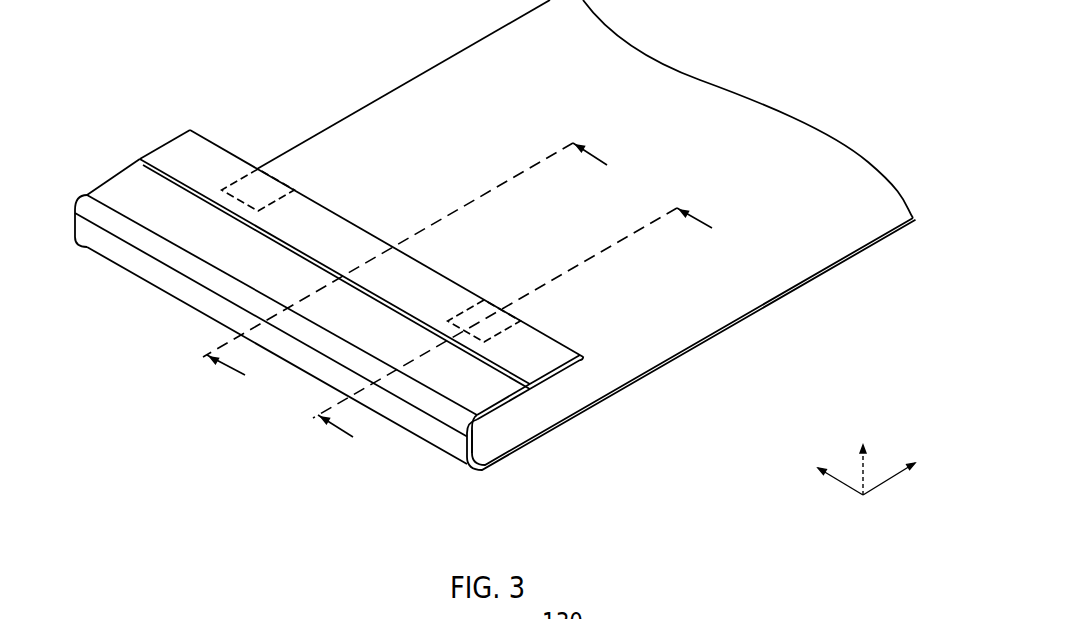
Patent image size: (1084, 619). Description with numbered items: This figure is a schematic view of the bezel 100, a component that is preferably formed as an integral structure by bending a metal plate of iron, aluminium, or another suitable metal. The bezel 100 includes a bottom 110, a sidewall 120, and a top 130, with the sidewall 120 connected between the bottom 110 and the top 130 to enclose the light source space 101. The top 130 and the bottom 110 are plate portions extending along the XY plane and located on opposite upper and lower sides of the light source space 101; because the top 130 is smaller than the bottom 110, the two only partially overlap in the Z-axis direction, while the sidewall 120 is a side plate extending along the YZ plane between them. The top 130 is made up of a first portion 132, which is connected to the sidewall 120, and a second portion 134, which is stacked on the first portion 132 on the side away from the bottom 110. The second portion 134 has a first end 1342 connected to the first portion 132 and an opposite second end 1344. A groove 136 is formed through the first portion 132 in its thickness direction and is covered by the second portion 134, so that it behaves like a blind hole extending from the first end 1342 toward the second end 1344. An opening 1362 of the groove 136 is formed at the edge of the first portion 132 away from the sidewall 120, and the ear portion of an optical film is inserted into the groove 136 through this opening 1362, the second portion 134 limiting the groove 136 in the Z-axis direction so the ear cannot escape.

The bezel 100 is at (188, 43).
The bottom 110 is at (837, 172).
The sidewall 120 is at (172, 278).
The light source space 101 is at (487, 447).
The top 130 is at (642, 399).
The first portion 132 is at (574, 361).
The second portion 134 is at (413, 231).
The first end 1342 is at (196, 129).
The second end 1344 is at (140, 166).
The groove 136 is at (528, 206).
The opening 1362 is at (518, 313).